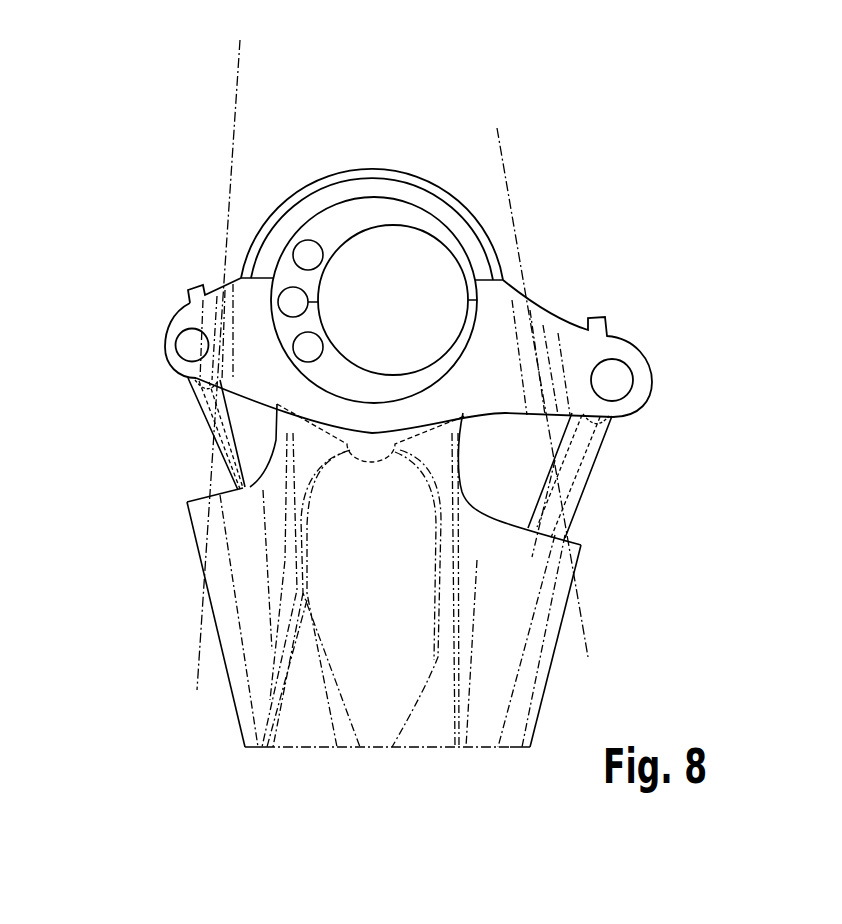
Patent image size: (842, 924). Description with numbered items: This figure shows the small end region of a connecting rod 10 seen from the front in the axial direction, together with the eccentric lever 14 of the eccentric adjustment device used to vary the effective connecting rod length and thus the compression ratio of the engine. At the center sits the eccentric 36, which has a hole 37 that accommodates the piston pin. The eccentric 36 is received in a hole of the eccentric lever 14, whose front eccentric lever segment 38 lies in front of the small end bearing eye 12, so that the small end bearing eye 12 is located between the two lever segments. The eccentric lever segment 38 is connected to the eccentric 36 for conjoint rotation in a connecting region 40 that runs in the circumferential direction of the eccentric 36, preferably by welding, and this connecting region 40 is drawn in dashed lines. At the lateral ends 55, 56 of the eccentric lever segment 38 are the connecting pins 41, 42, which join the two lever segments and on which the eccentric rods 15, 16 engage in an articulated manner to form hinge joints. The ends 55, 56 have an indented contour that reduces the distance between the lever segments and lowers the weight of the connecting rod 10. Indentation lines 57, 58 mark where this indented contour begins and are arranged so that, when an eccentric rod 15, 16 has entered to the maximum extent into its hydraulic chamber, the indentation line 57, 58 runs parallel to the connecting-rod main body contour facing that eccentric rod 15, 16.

The connecting rod 10 is at (520, 81).
The small end bearing eye 12 is at (437, 186).
The eccentric lever 14 is at (409, 303).
The eccentric rod 15 is at (212, 420).
The eccentric rod 16 is at (590, 462).
The eccentric 36 is at (324, 222).
The hole 37 is at (375, 260).
The eccentric lever segment 38 is at (496, 368).
The connecting region 40 is at (387, 198).
The connecting pin 41 is at (190, 347).
The connecting pin 42 is at (618, 382).
The end 55 is at (158, 300).
The end 56 is at (650, 322).
The indentation line 57 is at (238, 133).
The indentation line 58 is at (497, 140).